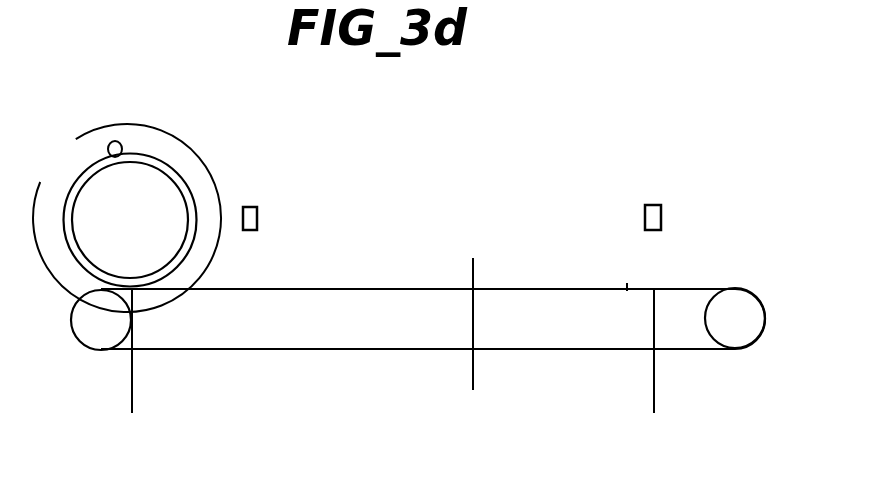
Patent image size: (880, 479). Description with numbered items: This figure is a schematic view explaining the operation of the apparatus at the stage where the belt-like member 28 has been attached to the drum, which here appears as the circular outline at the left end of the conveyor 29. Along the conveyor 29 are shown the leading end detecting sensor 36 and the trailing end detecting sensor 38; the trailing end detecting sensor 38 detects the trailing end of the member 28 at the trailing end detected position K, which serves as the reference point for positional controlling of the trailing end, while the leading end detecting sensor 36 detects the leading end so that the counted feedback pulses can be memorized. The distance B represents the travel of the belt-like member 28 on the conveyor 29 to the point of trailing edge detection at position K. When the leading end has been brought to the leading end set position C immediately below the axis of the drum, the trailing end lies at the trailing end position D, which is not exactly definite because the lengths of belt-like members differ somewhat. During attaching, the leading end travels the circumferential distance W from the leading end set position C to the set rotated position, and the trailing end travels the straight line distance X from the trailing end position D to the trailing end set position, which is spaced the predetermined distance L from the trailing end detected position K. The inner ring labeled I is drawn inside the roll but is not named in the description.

The belt-like member 28 is at (117, 157).
The conveyor 29 is at (345, 288).
The leading end detecting sensor 36 is at (257, 216).
The trailing end detecting sensor 38 is at (645, 212).
The circumferential distance W is at (127, 218).
The inner layer I is at (172, 210).
The leading end set position C is at (116, 315).
The trailing end position D is at (473, 280).
The trailing end detected position K is at (654, 288).
The distance B is at (625, 275).
The straight line distance X is at (473, 382).
The predetermined distance L is at (133, 408).